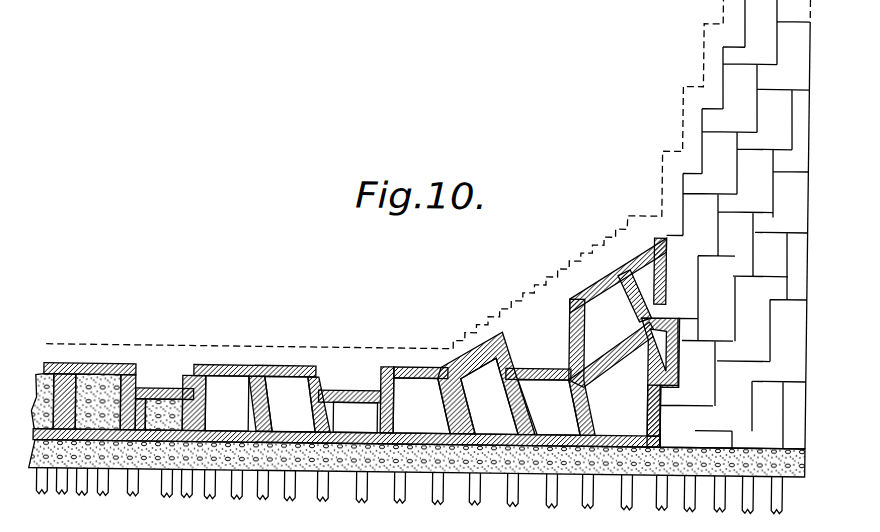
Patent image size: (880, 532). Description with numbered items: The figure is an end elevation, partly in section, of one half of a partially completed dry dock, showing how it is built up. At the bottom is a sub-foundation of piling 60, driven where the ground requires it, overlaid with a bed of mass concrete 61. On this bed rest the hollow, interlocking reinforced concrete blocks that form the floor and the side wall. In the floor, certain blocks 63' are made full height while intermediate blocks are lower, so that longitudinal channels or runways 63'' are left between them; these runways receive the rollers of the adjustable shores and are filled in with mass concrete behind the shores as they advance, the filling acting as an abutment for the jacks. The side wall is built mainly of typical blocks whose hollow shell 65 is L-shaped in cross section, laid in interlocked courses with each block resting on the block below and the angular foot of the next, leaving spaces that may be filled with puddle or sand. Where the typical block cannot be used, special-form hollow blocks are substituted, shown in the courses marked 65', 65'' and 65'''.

The piling 60 is at (438, 502).
The mass concrete 61 is at (577, 466).
The full-height blocks 63' is at (407, 334).
The longitudinal channels or runways 63'' is at (306, 353).
The hollow shell 65 is at (715, 224).
The course of special blocks 65' is at (820, 237).
The course of special blocks 65'' is at (795, 415).
The course of special blocks 65''' is at (673, 416).